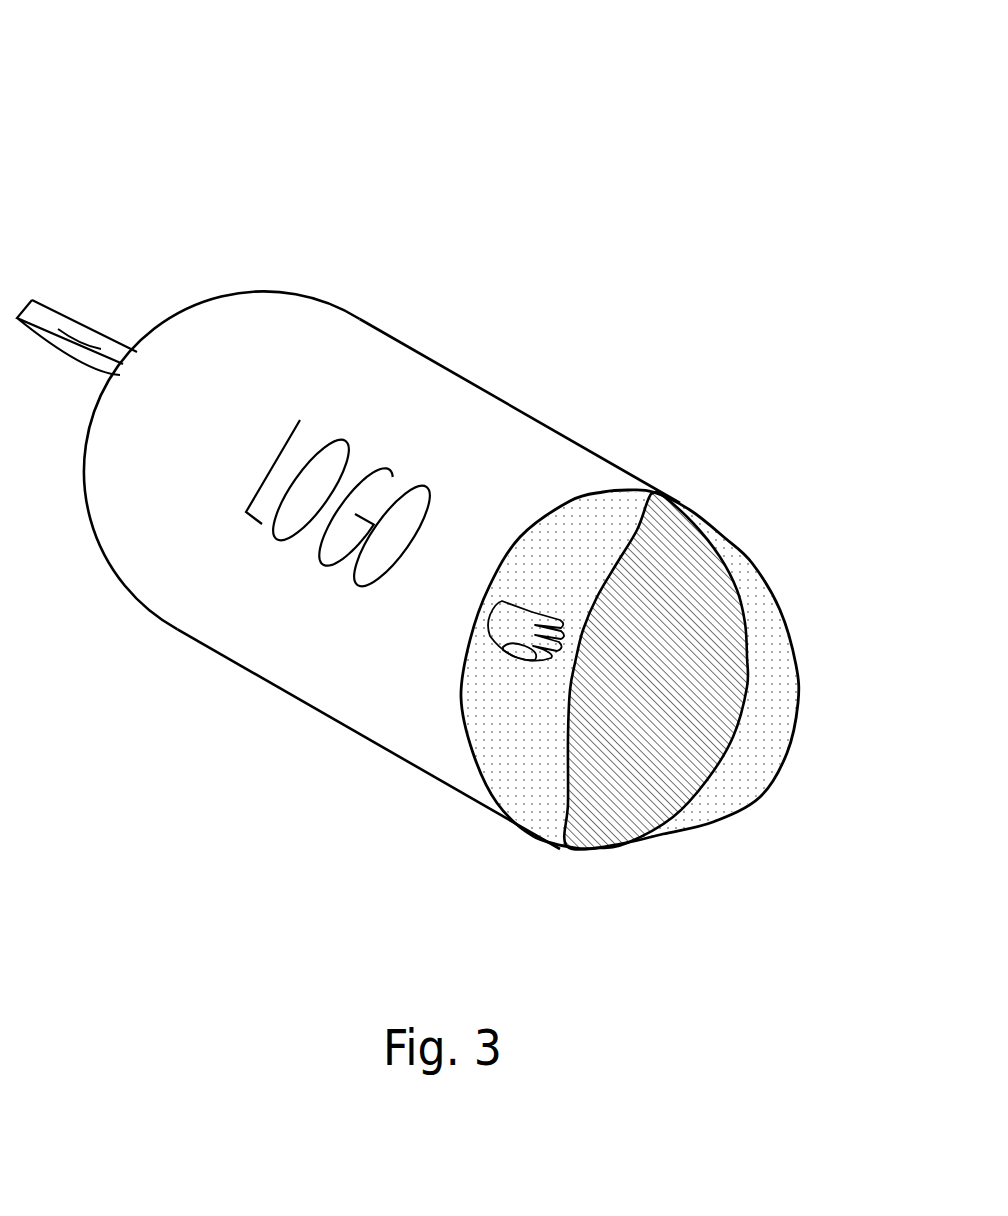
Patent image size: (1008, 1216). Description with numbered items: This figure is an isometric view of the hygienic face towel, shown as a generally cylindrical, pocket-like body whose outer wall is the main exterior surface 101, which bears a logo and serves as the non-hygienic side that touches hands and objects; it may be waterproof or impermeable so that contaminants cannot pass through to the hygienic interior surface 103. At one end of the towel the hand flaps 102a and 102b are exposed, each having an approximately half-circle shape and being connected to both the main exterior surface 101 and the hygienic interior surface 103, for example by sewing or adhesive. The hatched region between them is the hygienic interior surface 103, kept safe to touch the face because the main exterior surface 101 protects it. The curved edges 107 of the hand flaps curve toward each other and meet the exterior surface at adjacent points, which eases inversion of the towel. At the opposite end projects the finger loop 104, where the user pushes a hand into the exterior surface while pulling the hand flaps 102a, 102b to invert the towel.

The main exterior surface 101 is at (328, 698).
The hand flap 102a is at (600, 532).
The hand flap 102b is at (765, 627).
The hygienic interior surface 103 is at (680, 558).
The finger loop 104 is at (78, 305).
The curved edges 107 is at (707, 827).